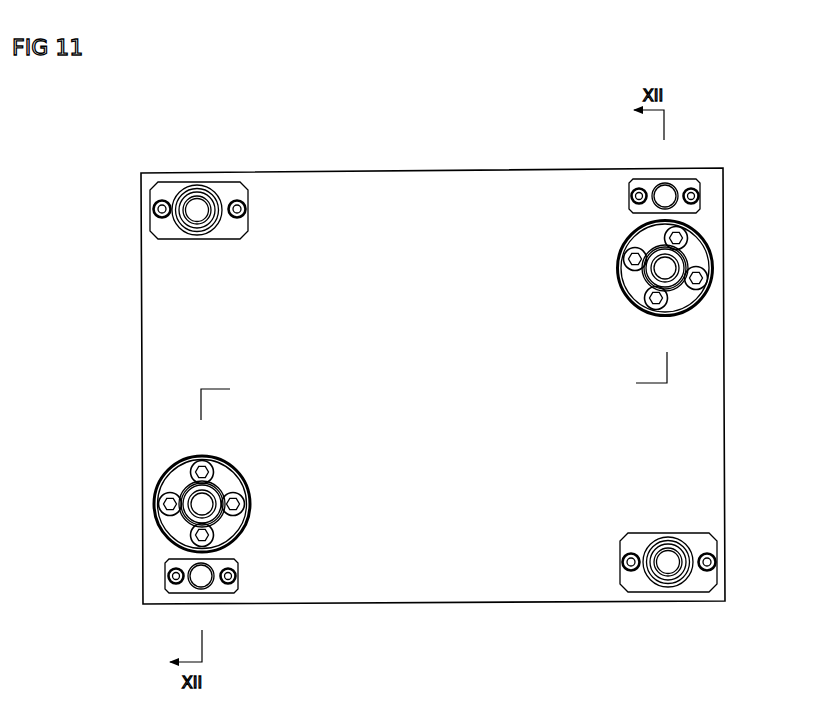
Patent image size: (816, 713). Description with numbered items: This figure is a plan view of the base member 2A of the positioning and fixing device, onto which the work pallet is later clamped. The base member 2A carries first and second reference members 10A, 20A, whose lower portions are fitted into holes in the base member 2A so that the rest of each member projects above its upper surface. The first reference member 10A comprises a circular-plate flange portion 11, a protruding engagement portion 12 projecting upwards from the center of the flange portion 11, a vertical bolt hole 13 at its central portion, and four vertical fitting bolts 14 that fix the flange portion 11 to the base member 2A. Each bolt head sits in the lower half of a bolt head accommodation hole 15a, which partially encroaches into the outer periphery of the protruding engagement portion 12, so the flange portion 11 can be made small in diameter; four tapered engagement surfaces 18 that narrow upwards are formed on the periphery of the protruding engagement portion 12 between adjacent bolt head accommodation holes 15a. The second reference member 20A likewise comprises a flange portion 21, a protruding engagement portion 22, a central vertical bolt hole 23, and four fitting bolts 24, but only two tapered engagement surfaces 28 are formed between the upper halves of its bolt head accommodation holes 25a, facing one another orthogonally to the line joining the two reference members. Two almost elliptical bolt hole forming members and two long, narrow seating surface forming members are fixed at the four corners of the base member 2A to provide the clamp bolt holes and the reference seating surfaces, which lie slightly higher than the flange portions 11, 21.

The base member 2A is at (463, 167).
The first reference member 10A is at (248, 453).
The flange portion 11 is at (172, 530).
The protruding engagement portion 12 is at (172, 486).
The vertical bolt hole 13 is at (175, 484).
The fitting bolts 14 is at (189, 468).
The bolt head accommodation hole 15a is at (235, 500).
The tapered engagement surfaces 18 is at (216, 470).
The second reference member 20A is at (715, 289).
The flange portion 21 is at (697, 236).
The protruding engagement portion 22 is at (700, 253).
The vertical bolt hole 23 is at (657, 275).
The fitting bolts 24 is at (620, 272).
The bolt head accommodation holes 25a is at (650, 308).
The tapered engagement surfaces 28 is at (678, 293).